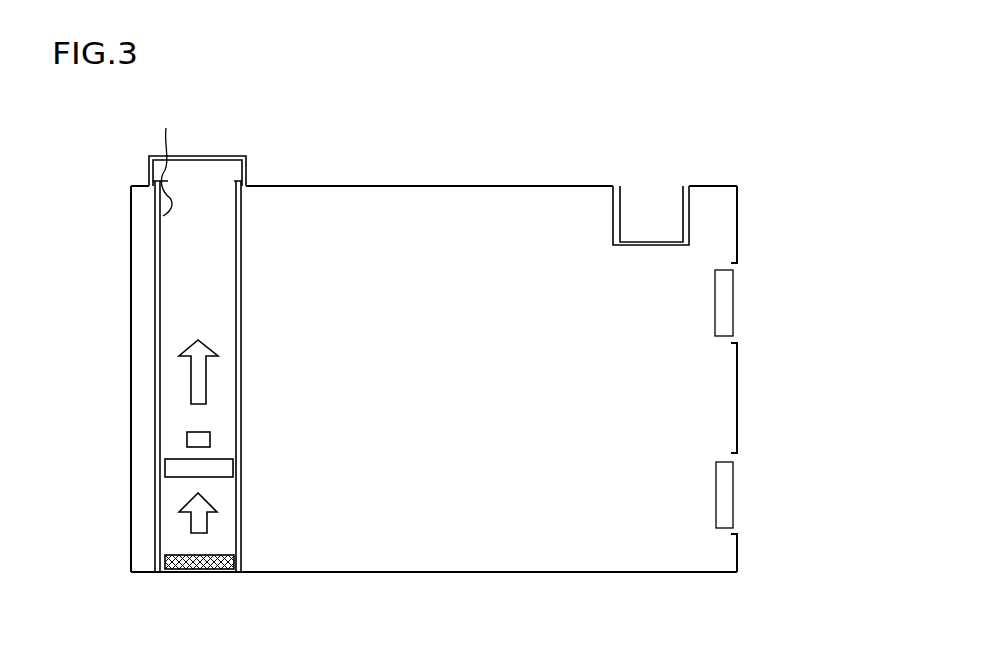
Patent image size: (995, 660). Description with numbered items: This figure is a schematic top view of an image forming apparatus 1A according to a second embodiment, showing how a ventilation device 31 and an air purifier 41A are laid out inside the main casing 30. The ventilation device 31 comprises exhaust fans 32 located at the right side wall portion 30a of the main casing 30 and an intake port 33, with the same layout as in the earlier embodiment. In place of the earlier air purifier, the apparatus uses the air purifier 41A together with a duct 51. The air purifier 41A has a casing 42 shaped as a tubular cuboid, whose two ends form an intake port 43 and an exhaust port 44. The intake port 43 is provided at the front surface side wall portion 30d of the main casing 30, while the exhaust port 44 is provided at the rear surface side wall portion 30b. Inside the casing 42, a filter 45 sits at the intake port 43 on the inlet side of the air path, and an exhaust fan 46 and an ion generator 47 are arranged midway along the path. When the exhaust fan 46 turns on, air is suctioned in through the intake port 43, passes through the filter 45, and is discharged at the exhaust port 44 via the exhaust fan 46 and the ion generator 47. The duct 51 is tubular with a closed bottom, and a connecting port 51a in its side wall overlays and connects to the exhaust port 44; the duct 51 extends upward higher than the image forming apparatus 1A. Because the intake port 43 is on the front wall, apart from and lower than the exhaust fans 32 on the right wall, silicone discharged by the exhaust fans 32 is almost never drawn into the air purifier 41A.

The image forming apparatus 1A is at (458, 92).
The main casing 30 is at (484, 368).
The right side wall portion 30a is at (737, 548).
The rear surface side wall portion 30b is at (550, 186).
The front surface side wall portion 30d is at (497, 573).
The ventilation device 31 is at (749, 338).
The exhaust fans 32 is at (725, 495).
The intake port 33 is at (665, 197).
The air purifier 41A is at (154, 370).
The casing 42 is at (242, 372).
The intake port 43 is at (162, 573).
The exhaust port 44 is at (162, 208).
The filter 45 is at (235, 562).
The exhaust fan 46 is at (210, 466).
The ion generator 47 is at (207, 437).
The duct 51 is at (225, 150).
The connecting port 51a is at (162, 155).